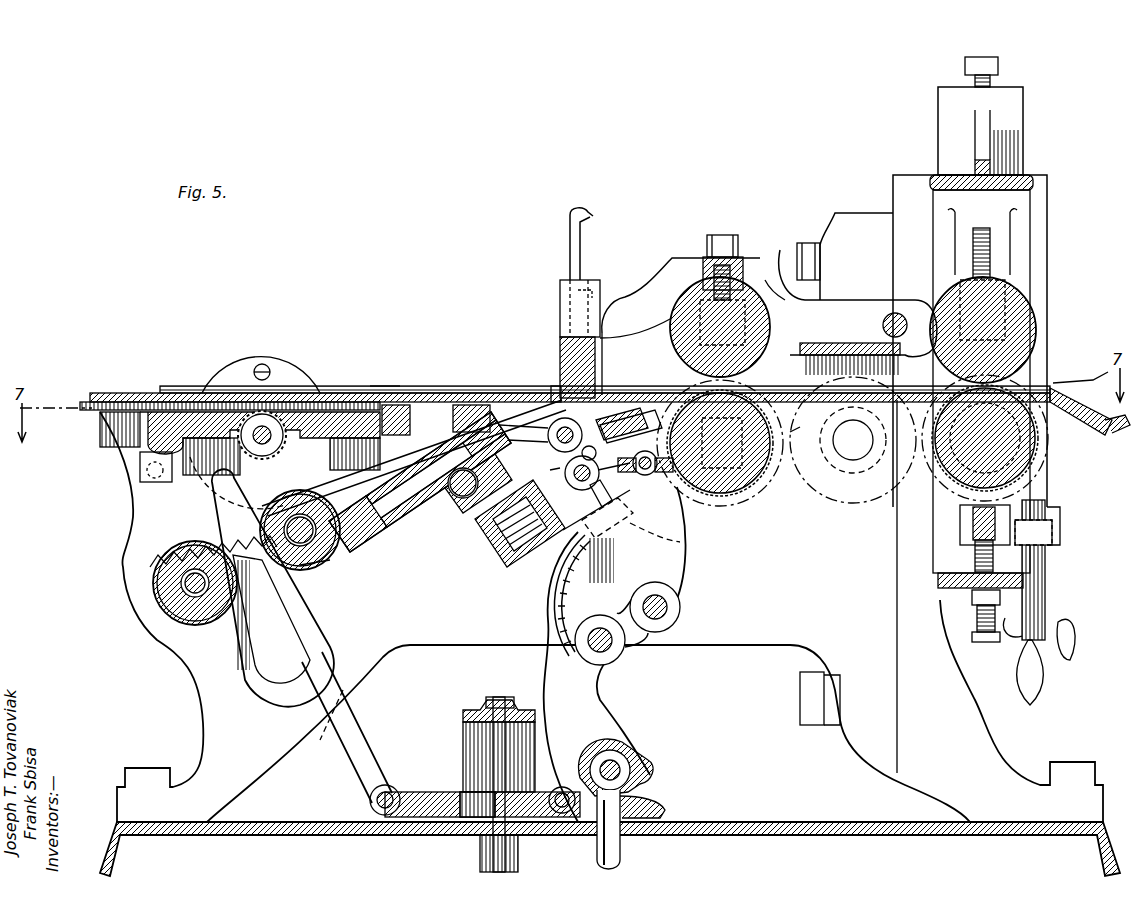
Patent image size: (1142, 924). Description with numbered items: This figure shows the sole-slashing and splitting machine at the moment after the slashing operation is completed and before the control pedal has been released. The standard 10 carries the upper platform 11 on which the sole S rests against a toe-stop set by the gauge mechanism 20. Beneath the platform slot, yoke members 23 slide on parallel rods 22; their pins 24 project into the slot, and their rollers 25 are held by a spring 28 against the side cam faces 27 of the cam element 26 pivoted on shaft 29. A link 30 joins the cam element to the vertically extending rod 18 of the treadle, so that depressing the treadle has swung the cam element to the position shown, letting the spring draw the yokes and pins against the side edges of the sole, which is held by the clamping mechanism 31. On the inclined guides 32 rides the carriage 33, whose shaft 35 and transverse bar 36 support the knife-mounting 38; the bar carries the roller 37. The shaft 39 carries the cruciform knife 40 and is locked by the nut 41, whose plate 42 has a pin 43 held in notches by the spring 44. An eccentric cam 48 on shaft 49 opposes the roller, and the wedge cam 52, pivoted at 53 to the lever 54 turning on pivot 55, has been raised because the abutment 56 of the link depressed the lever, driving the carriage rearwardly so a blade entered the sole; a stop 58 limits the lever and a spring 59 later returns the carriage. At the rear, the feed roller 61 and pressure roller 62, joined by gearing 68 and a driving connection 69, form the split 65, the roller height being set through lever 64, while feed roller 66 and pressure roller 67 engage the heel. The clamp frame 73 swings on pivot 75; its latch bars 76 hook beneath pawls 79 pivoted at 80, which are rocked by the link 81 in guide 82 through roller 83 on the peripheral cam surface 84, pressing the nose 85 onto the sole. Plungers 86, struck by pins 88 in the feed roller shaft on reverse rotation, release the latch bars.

The sole S is at (380, 390).
The standard 10 is at (822, 586).
The upper platform 11 is at (432, 390).
The rod 18 is at (628, 848).
The gauge mechanism 20 is at (285, 372).
The parallel rods 22 is at (557, 437).
The yoke members 23 is at (580, 490).
The pins 24 is at (560, 392).
The rollers 25 is at (650, 525).
The cam element 26 is at (624, 567).
The side cam faces 27 is at (563, 618).
The spring 28 is at (554, 475).
The shaft 29 is at (680, 615).
The link 30 is at (590, 714).
The clamping mechanism 31 is at (622, 300).
The guides 32 is at (390, 560).
The carriage 33 is at (390, 555).
The shaft 35 is at (430, 518).
The transverse bar 36 is at (438, 499).
The roller 37 is at (318, 560).
The knife-mounting 38 is at (310, 520).
The shaft 39 is at (475, 500).
The knife 40 is at (490, 390).
The nut 41 is at (488, 540).
The plate 42 is at (455, 495).
The pin 43 is at (568, 480).
The spring 44 is at (528, 545).
The eccentric cam 48 is at (157, 607).
The shaft 49 is at (184, 584).
The wedge cam 52 is at (240, 657).
The pivotal connection 53 is at (388, 788).
The lever 54 is at (430, 795).
The pivot 55 is at (565, 812).
The abutment 56 is at (650, 786).
The stop 58 is at (490, 848).
The spring 59 is at (215, 563).
The feed roller 61 is at (1030, 470).
The pressure roller 62 is at (1005, 300).
The lever 64 is at (1040, 605).
The split 65 is at (975, 532).
The feed roller 66 is at (745, 478).
The pressure roller 67 is at (773, 285).
The gearing 68 is at (830, 495).
The driving connection 69 is at (1040, 326).
The frame 73 is at (858, 294).
The pivot 75 is at (888, 316).
The latch bars 76 is at (590, 378).
The pawls 79 is at (602, 458).
The pivot 80 is at (605, 418).
The link 81 is at (622, 432).
The guide 82 is at (625, 475).
The roller 83 is at (650, 472).
The peripheral cam surface 84 is at (572, 580).
The nose 85 is at (562, 388).
The plungers 86 is at (684, 364).
The pins 88 is at (806, 420).